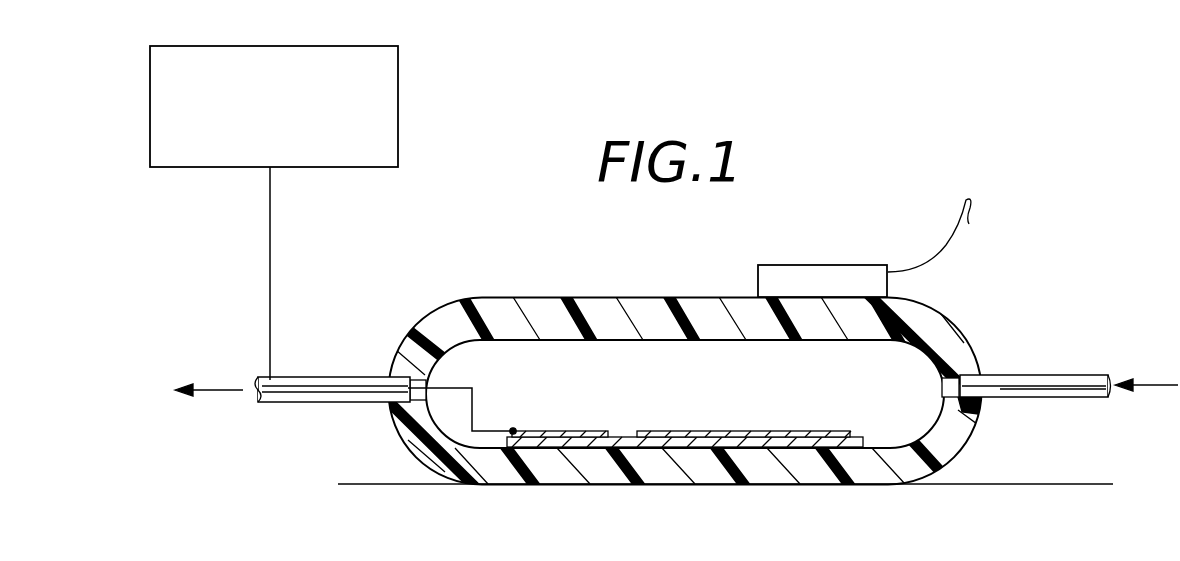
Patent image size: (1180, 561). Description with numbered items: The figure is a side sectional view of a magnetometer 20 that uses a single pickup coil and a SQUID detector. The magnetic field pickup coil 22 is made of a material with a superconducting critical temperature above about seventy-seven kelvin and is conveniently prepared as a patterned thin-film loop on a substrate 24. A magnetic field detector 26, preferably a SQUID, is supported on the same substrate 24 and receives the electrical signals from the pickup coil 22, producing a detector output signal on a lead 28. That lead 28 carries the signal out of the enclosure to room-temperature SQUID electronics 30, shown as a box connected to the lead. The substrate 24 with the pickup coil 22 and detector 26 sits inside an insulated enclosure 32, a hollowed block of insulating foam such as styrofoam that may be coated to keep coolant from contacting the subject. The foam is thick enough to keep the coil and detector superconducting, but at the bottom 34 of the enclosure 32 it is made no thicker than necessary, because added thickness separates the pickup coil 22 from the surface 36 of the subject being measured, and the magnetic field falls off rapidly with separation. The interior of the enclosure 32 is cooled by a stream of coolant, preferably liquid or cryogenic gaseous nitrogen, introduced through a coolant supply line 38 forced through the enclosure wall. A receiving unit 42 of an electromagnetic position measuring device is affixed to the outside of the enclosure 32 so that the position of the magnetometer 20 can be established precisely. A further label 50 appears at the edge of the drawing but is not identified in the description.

The magnetometer 20 is at (550, 297).
The magnetic field pickup coil 22 is at (795, 431).
The substrate 24 is at (850, 450).
The magnetic field detector 26 is at (576, 431).
The lead 28 is at (274, 218).
The SQUID electronics 30 is at (402, 102).
The insulated enclosure 32 is at (962, 424).
The bottom of the enclosure 34 is at (694, 462).
The surface 36 is at (1068, 484).
The coolant supply line 38 is at (1070, 382).
The receiving unit 42 is at (819, 266).
The sample 50 is at (155, 551).